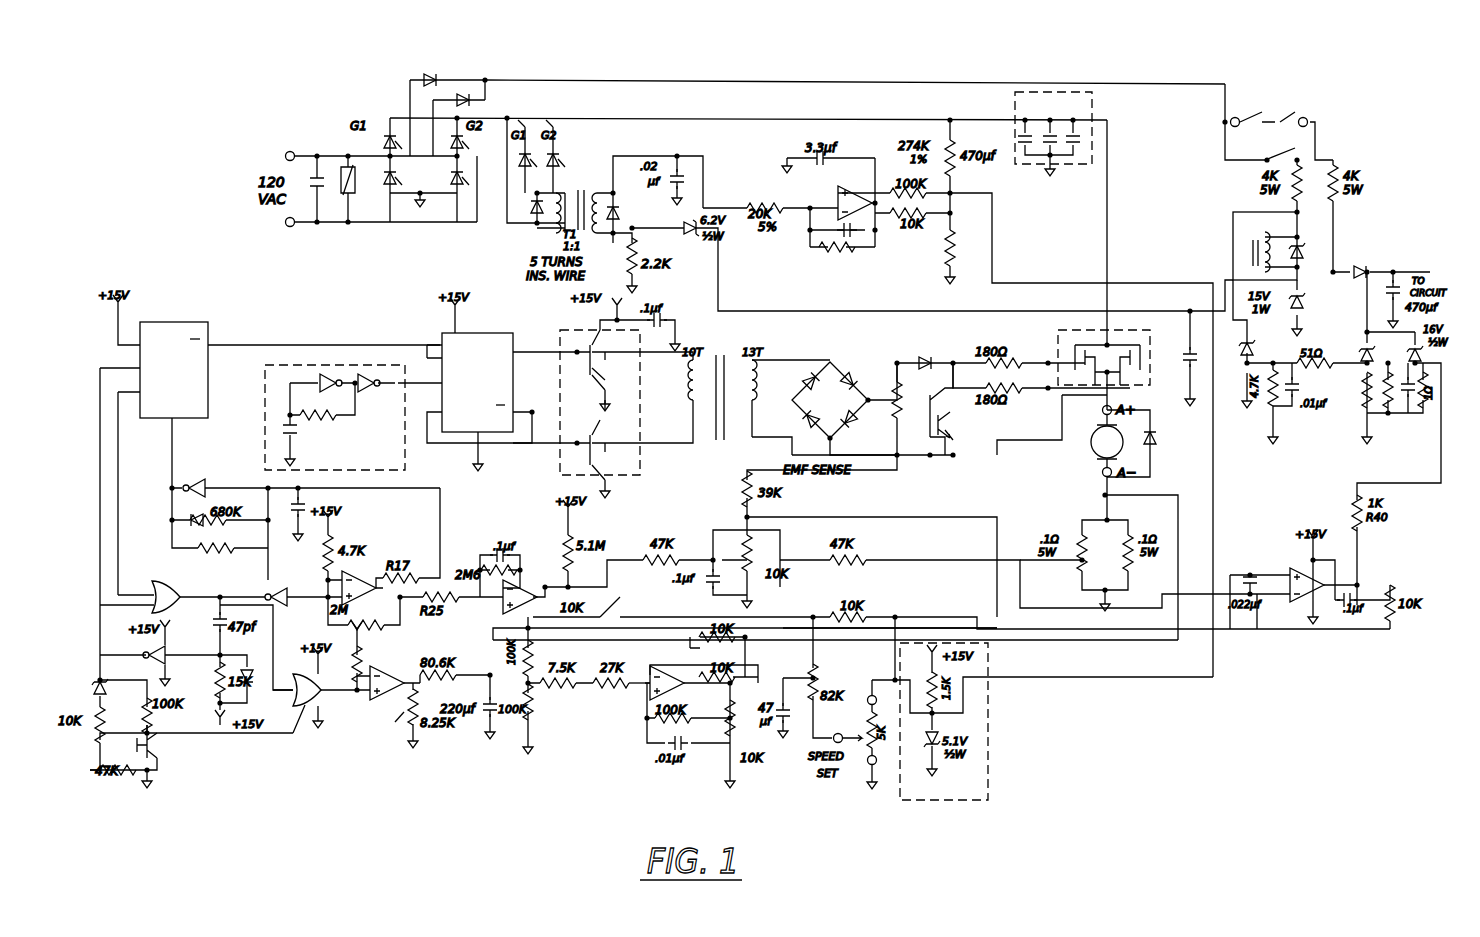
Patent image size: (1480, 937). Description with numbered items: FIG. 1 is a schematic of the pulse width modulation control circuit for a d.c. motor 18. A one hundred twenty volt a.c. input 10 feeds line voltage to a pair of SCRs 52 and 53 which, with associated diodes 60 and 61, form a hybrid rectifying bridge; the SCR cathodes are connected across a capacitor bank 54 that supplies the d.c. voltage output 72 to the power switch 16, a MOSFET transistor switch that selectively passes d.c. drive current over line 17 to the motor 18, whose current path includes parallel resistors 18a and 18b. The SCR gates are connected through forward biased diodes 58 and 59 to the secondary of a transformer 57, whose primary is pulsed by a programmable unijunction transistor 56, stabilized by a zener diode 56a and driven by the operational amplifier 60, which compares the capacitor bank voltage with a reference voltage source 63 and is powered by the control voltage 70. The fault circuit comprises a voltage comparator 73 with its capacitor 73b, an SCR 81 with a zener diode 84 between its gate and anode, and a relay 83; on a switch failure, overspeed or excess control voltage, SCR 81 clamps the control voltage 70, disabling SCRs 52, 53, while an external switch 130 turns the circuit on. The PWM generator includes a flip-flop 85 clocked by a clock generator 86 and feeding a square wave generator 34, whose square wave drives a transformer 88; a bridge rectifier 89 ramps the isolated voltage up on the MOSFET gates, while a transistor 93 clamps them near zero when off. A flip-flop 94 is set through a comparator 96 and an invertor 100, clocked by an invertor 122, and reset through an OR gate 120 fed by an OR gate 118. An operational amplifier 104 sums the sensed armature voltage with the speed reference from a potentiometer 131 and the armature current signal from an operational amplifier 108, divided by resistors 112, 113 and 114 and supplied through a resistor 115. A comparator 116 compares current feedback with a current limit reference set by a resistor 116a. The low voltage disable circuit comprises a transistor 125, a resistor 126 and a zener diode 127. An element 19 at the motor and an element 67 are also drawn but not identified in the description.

The a.c. input 10 is at (270, 160).
The SCR 52 is at (384, 140).
The SCR 53 is at (462, 140).
The diode 60 is at (384, 190).
The diode 61 is at (462, 192).
The forward biased diode 58 is at (536, 128).
The transformer 57 is at (578, 190).
The forward biased diode 59 is at (585, 148).
The programmable unijunction transistor 56 is at (616, 175).
The zener diode 56a is at (686, 221).
The integrating capacitor 67 is at (805, 156).
The capacitor bank 54 is at (1070, 92).
The d.c. voltage output 72 is at (1110, 183).
The external switch 130 is at (1273, 105).
The relay 83 is at (1233, 250).
The control voltage 70 is at (1398, 268).
The SCR 81 is at (1360, 352).
The zener diode 84 is at (1420, 355).
The power switch 16 is at (1058, 335).
The d.c. drive signal line 17 is at (1101, 408).
The motor 18 is at (1090, 448).
The armature terminal A- 19 is at (1098, 473).
The resistor 18a is at (1075, 568).
The resistor 18b is at (1130, 566).
The bridge rectifier 89 is at (842, 372).
The transformer 88 is at (718, 440).
The transistor 93 is at (945, 432).
The flip-flop 94 is at (207, 324).
The flip-flop 85 is at (492, 335).
The clock generator 86 is at (265, 443).
The invertor 122 is at (208, 482).
The square wave generator 34 is at (558, 468).
The OR gate 120 is at (178, 585).
The invertor 100 is at (277, 590).
The comparator 96 is at (372, 575).
The operational amplifier 104 is at (497, 600).
The zener diode 127 is at (100, 688).
The transistor 125 is at (158, 758).
The resistor 126 is at (98, 742).
The OR gate 118 is at (325, 735).
The comparator 116 is at (372, 672).
The resistor 116a is at (395, 722).
The resistor 114 is at (520, 735).
The resistor 115 is at (533, 660).
The resistor 113 is at (575, 695).
The resistor 112 is at (625, 695).
The operational amplifier 108 is at (662, 678).
The potentiometer 131 is at (812, 752).
The reference voltage source 63 is at (988, 712).
The voltage comparator 73 is at (1300, 568).
The capacitor 73b is at (1240, 568).